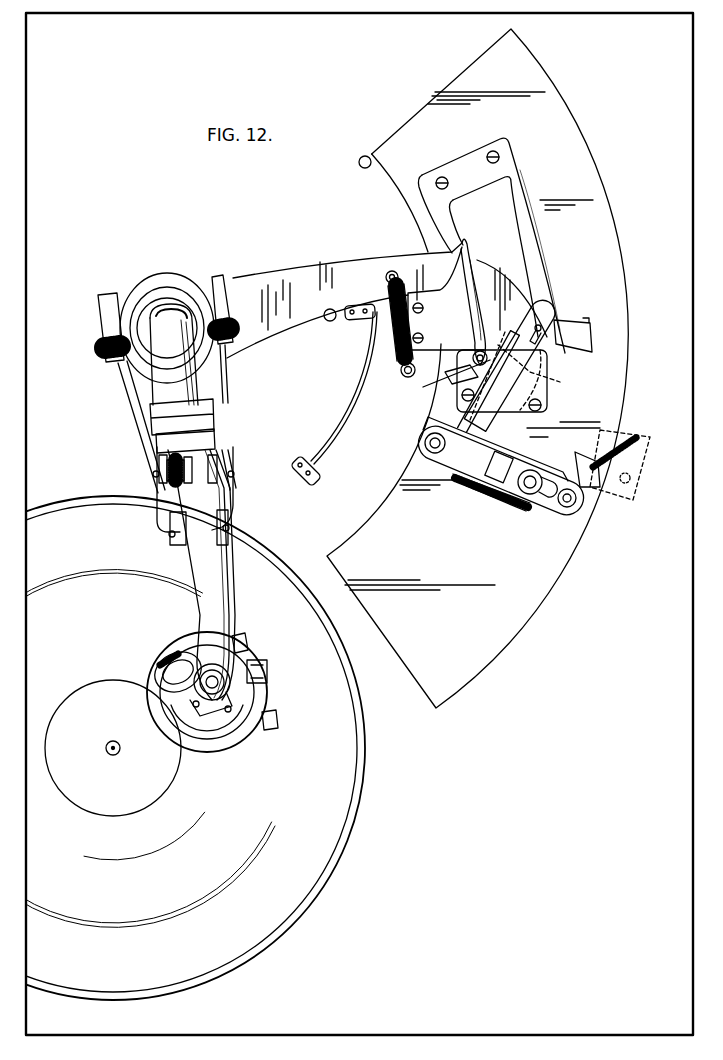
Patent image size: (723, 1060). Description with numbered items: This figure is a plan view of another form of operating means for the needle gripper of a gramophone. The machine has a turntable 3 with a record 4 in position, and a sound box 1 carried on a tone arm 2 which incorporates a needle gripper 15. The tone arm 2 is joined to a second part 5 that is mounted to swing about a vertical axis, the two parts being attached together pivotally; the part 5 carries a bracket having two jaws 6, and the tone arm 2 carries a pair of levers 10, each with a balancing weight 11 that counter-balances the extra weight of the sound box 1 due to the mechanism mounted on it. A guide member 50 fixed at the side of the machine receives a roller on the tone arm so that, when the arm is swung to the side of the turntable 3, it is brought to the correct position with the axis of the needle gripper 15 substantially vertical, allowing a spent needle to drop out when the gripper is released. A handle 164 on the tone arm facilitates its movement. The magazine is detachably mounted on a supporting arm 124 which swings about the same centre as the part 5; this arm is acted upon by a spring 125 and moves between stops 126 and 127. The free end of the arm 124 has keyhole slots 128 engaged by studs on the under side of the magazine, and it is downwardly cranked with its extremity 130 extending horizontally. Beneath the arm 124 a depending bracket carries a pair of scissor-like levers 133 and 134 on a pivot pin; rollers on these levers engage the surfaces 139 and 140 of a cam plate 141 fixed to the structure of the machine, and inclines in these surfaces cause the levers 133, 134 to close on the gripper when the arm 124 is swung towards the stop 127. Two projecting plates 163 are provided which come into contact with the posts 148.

The sound box 1 is at (185, 733).
The tone arm 2 is at (193, 548).
The turntable 3 is at (357, 738).
The record 4 is at (330, 773).
The second part of tone arm 5 is at (161, 332).
The jaws 6 is at (200, 436).
The levers 10 is at (128, 396).
The balancing weight 11 is at (108, 318).
The needle gripper 15 is at (263, 680).
The guide member 50 is at (352, 416).
The supporting arm 124 is at (324, 286).
The spring 125 is at (397, 345).
The stop 126 is at (327, 322).
The stop 127 is at (358, 163).
The keyhole slots 128 is at (533, 337).
The extremity of arm 130 is at (420, 455).
The scissor-like lever 133 is at (445, 381).
The scissor-like lever 134 is at (545, 386).
The cam surface 139 is at (465, 219).
The cam surface 140 is at (536, 256).
The cam plate 141 is at (455, 173).
The posts 148 is at (529, 495).
The projecting plates 163 is at (238, 645).
The handle 164 is at (165, 658).